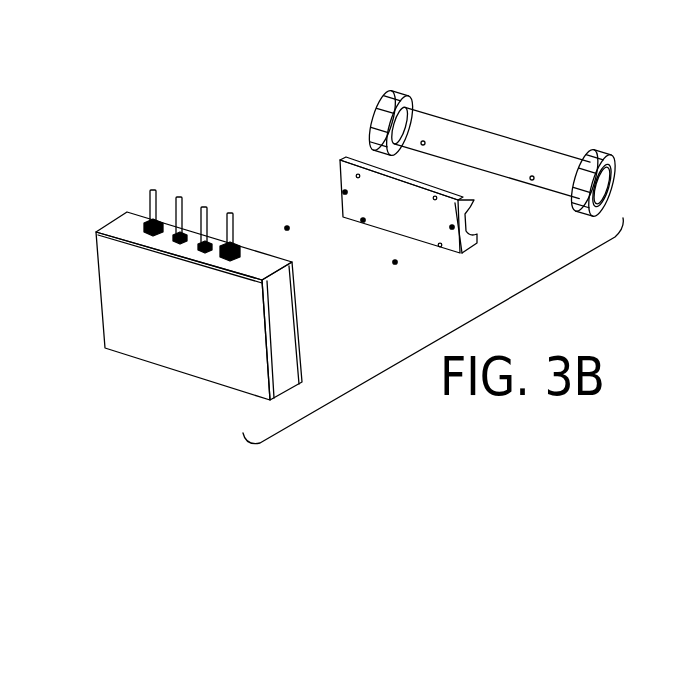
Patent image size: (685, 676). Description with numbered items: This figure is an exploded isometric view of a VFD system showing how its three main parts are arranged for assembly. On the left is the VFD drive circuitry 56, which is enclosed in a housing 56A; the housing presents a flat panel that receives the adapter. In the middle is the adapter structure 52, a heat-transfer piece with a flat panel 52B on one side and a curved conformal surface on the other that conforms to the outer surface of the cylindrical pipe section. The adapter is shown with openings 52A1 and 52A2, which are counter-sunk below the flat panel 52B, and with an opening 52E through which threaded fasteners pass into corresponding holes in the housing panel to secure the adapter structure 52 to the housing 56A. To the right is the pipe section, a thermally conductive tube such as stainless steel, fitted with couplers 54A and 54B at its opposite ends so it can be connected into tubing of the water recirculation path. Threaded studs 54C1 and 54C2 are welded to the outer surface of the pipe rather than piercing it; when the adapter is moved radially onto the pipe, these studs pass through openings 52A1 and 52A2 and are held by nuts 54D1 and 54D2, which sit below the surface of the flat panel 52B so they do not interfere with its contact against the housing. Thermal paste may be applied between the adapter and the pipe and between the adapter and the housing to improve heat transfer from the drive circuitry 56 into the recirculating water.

The adapter structure 52 is at (380, 205).
The opening 52A1 is at (345, 192).
The opening 52A2 is at (452, 227).
The flat panel 52B is at (353, 213).
The opening 52E is at (363, 221).
The coupler 54A is at (608, 158).
The coupler 54B is at (375, 103).
The threaded stud 54C1 is at (423, 143).
The threaded stud 54C2 is at (532, 178).
The nut 54D1 is at (287, 228).
The nut 54D2 is at (395, 262).
The VFD drive circuitry 56 is at (182, 299).
The housing 56A is at (148, 340).